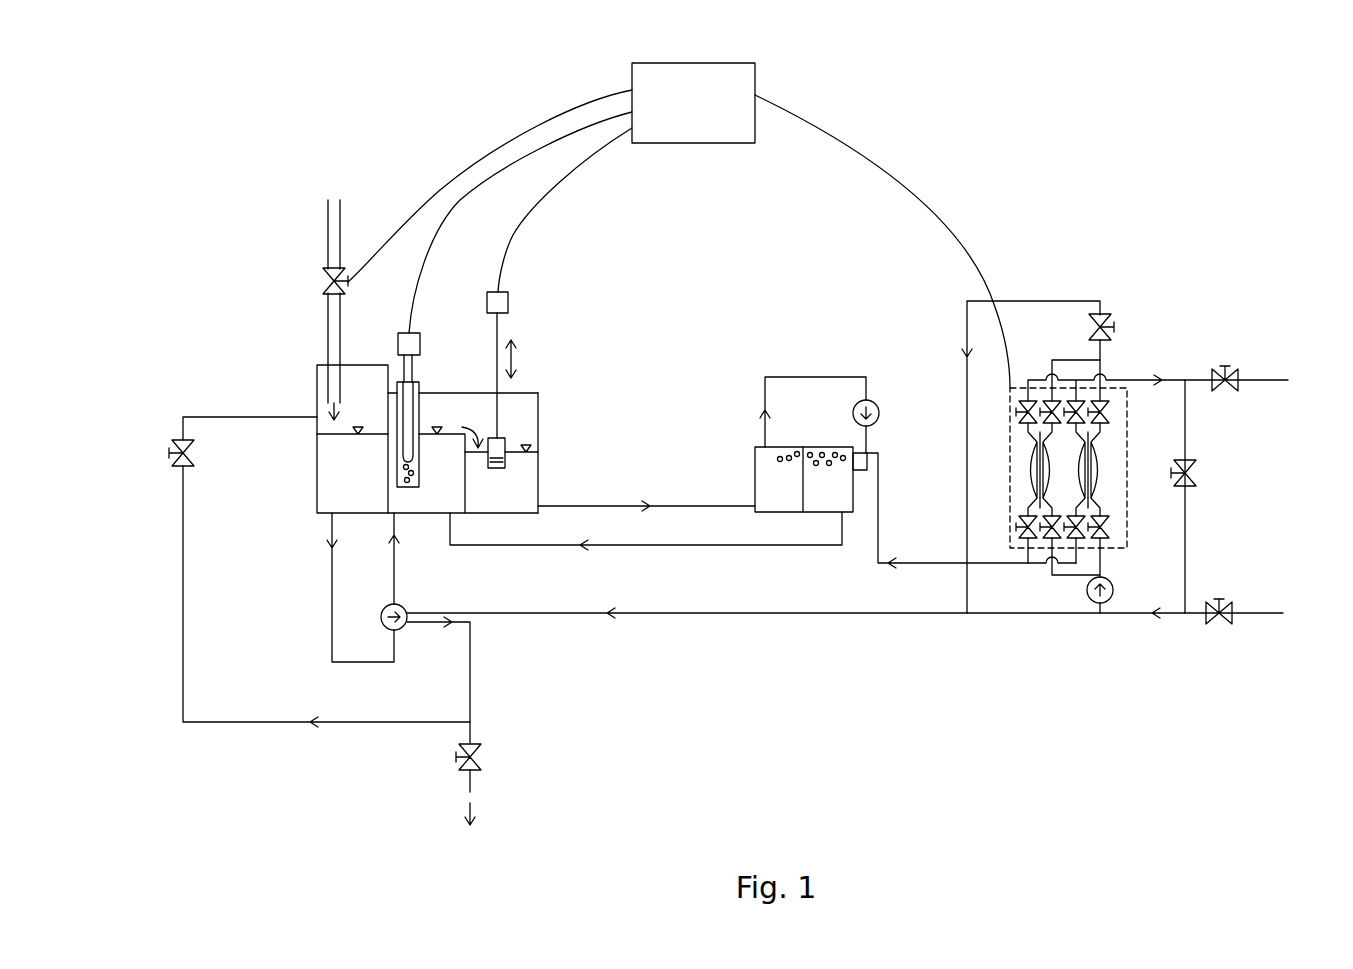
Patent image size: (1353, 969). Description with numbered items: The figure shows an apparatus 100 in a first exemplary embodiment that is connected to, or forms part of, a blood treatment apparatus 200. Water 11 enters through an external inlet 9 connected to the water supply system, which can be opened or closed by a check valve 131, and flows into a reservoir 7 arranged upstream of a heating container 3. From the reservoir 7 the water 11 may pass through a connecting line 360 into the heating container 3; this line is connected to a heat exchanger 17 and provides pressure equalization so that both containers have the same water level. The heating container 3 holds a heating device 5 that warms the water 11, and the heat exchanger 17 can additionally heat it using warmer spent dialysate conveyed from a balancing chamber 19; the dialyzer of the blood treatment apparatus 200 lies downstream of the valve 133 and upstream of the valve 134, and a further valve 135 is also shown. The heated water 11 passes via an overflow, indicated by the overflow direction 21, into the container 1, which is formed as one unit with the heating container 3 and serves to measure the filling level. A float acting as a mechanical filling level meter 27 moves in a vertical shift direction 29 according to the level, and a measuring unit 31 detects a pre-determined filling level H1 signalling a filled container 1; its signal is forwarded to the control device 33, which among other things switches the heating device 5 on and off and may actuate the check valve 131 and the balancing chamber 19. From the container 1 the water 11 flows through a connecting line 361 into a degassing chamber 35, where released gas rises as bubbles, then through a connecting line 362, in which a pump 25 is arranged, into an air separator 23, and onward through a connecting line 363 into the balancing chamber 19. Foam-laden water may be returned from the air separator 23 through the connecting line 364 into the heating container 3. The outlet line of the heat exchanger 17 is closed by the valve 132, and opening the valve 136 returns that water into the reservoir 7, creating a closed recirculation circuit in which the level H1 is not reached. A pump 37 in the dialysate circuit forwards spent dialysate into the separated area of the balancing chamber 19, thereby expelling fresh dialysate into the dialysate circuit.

The apparatus 100 is at (994, 114).
The container 1 is at (512, 513).
The heating container 3 is at (428, 513).
The heating device 5 is at (398, 487).
The reservoir 7 is at (317, 457).
The inlet 9 is at (328, 346).
The fluid 11 is at (340, 487).
The heat exchanger 17 is at (403, 630).
The balancing chamber 19 is at (1118, 383).
The overflow direction 21 is at (462, 427).
The air separator 23 is at (853, 490).
The pump in the in-flow section 25 is at (880, 418).
The mechanical filling level meter 27 is at (507, 440).
The vertical shift direction of the float 29 is at (515, 355).
The measuring unit 31 is at (510, 300).
The control device 33 is at (679, 225).
The degassing chamber 35 is at (755, 476).
The pump in the dialysate circuit 37 is at (1095, 600).
The check valve 131 is at (330, 286).
The valve 132 is at (480, 765).
The valve 133 is at (1232, 372).
The valve 134 is at (1225, 625).
The valve 135 is at (1192, 470).
The valve 136 is at (172, 452).
The blood treatment apparatus 200 is at (1162, 468).
The connecting line 360 is at (330, 605).
The connecting line 361 is at (712, 505).
The connecting line 362 is at (818, 377).
The connecting line 363 is at (912, 562).
The connecting line 364 is at (683, 545).
The pre-determined filling level H1 is at (540, 452).